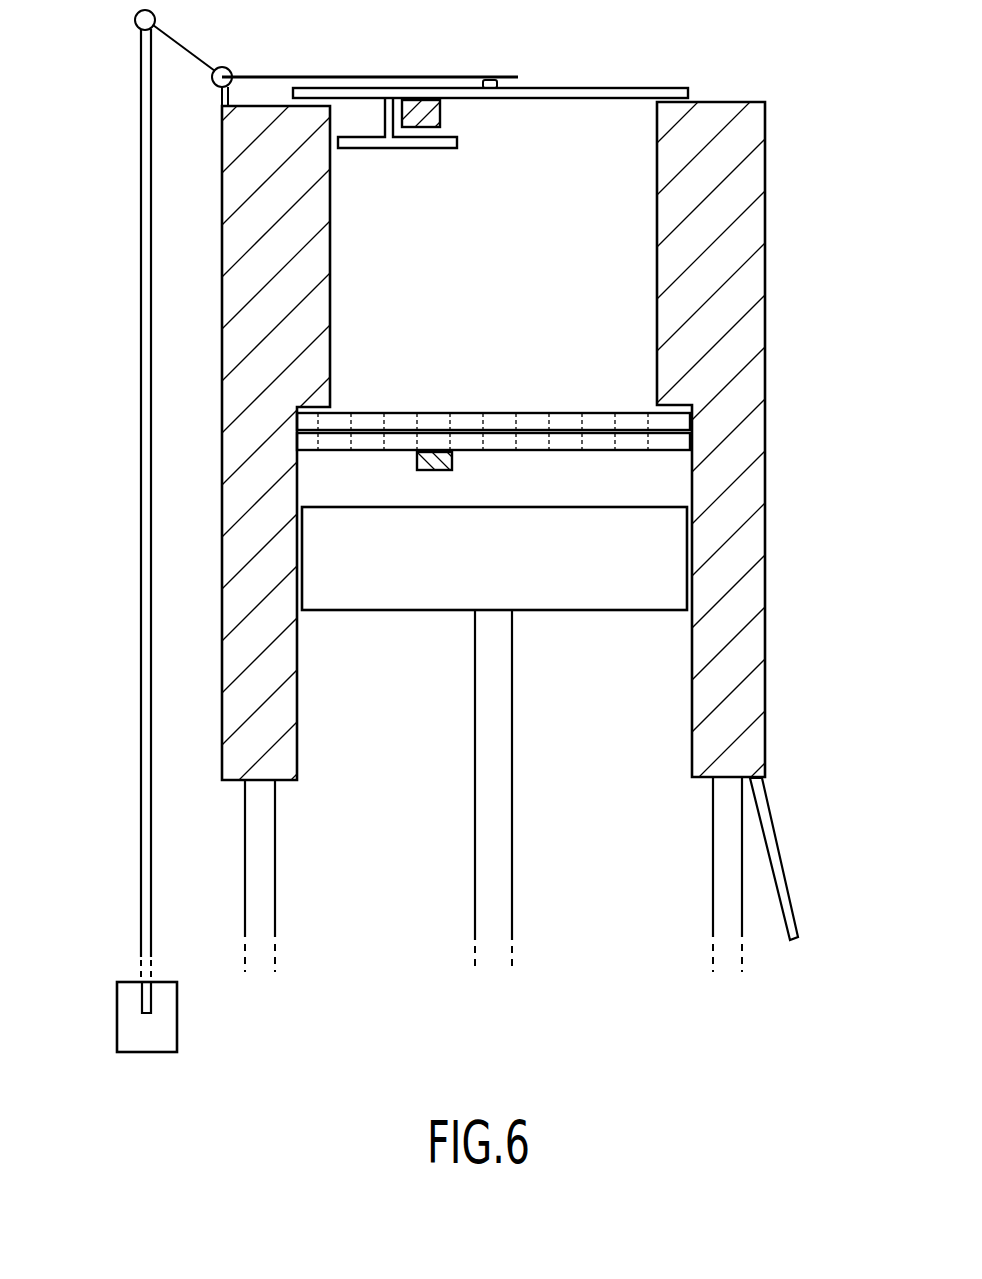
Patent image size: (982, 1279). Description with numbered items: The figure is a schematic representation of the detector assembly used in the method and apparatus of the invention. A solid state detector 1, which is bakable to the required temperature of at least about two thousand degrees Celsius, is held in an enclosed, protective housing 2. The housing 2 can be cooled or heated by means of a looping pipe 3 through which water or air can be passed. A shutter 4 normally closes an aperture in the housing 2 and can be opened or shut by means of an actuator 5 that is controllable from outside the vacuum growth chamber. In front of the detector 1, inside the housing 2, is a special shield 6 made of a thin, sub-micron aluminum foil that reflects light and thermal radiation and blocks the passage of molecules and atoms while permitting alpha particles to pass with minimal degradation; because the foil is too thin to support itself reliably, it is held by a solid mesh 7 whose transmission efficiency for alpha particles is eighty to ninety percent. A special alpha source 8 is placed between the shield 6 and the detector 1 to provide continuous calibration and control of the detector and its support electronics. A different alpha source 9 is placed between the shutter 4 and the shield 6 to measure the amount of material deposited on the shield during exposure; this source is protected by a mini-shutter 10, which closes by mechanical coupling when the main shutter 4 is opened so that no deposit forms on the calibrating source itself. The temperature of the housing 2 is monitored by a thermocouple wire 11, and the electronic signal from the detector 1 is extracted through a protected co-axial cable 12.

The solid state detector 1 is at (537, 564).
The housing 2 is at (748, 222).
The looping pipe 3 is at (258, 982).
The shutter 4 is at (594, 88).
The actuator 5 is at (117, 1020).
The shield 6 is at (690, 432).
The mesh 7 is at (643, 445).
The alpha source 8 is at (442, 470).
The alpha source 9 is at (442, 108).
The mini-shutter 10 is at (425, 148).
The thermocouple wire 11 is at (780, 872).
The co-axial cable 12 is at (513, 718).